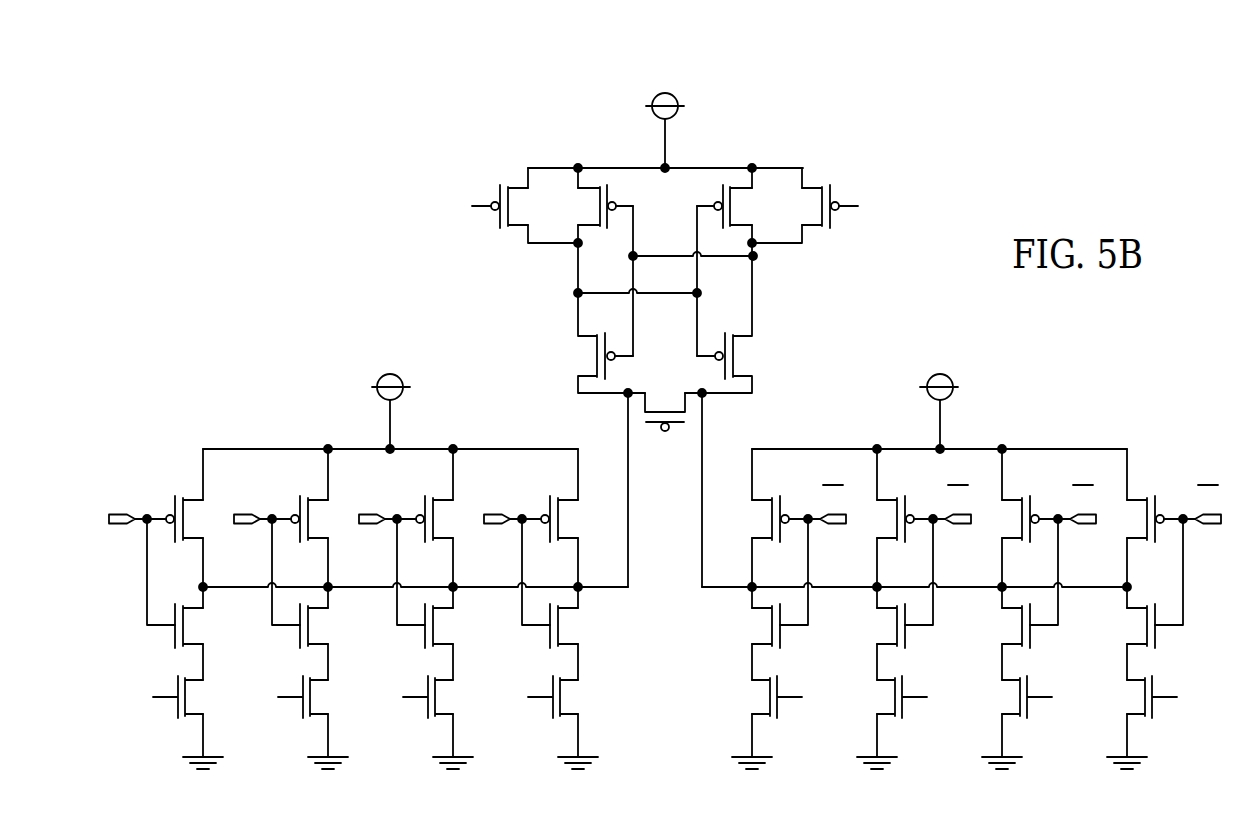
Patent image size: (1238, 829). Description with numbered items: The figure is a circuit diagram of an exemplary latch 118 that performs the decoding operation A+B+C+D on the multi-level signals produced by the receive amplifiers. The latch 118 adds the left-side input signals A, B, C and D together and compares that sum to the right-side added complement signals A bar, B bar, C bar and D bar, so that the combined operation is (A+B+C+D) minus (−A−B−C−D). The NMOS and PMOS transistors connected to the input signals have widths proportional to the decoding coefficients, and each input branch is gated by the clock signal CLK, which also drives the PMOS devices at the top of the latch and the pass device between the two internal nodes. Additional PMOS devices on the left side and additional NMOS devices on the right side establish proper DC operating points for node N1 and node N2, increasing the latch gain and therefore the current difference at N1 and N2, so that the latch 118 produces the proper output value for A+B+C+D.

The latch 118 is at (274, 150).
The node N1 is at (577, 484).
The node N2 is at (757, 484).
The clock signal CLK is at (665, 431).